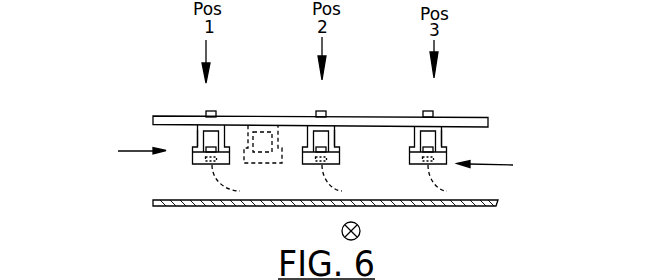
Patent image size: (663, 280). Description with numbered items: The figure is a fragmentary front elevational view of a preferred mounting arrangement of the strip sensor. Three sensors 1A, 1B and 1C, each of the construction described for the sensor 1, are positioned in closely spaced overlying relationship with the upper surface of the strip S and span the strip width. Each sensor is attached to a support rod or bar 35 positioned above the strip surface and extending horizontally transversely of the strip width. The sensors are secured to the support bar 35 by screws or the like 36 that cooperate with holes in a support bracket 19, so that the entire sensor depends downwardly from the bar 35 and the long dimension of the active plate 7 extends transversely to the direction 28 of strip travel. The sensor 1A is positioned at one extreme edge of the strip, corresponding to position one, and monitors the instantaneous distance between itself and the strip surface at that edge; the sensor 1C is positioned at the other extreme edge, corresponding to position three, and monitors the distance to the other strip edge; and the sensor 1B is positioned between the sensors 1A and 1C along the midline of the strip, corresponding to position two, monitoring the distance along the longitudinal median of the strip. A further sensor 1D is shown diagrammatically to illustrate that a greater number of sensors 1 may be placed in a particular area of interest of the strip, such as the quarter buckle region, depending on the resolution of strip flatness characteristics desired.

The sensor 1 is at (513, 172).
The sensor 1A is at (193, 162).
The sensor 1B is at (312, 165).
The sensor 1C is at (409, 165).
The sensor 1D is at (250, 152).
The active plate 7 is at (336, 181).
The support bracket 19 is at (197, 137).
The direction of strip travel 28 is at (360, 230).
The support bar 35 is at (495, 122).
The screws 36 is at (206, 111).
The strip S is at (492, 219).